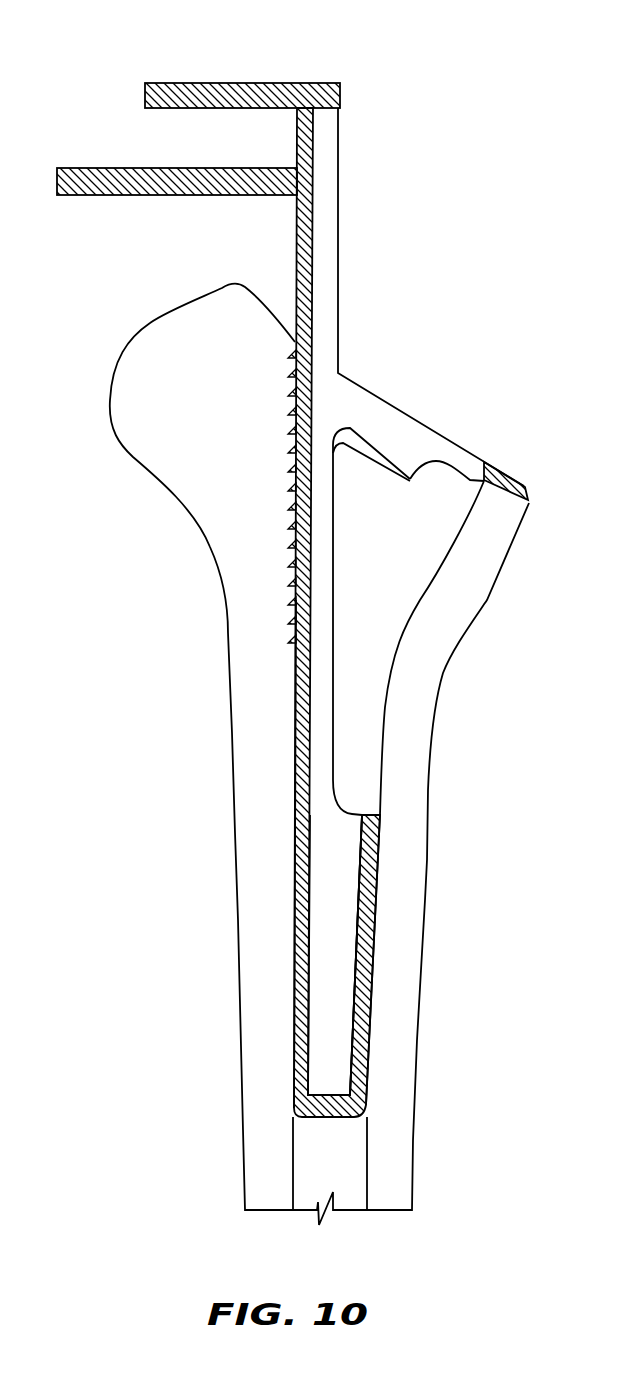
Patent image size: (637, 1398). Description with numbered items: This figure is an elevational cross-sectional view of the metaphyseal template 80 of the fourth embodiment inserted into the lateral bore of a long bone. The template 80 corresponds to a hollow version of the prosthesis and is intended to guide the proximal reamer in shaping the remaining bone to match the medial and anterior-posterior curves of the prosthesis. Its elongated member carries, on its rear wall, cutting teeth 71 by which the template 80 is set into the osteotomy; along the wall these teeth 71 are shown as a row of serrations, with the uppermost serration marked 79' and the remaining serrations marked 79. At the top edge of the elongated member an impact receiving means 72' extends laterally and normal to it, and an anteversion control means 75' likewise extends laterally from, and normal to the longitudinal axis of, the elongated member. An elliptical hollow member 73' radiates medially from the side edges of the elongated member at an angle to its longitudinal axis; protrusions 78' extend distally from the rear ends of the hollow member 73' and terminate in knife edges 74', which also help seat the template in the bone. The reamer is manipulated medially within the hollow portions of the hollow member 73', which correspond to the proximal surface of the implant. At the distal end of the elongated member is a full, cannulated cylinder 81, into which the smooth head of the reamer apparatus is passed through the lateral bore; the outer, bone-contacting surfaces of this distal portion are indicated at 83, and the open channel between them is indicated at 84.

The cutting teeth 71 is at (292, 543).
The impact receiving means 72' is at (242, 56).
The elliptical hollow member 73' is at (510, 450).
The knife edges 74' is at (371, 621).
The anteversion control means 75' is at (177, 220).
The protrusions 78' is at (452, 425).
The serrations on stem 79 is at (252, 515).
The uppermost serration 79' is at (266, 355).
The template 80 is at (376, 354).
The cannulated cylinder 81 is at (428, 1084).
The outer bone-contacting surfaces of stem 83 is at (293, 875).
The slot between stem and wedge portion 84 is at (342, 988).